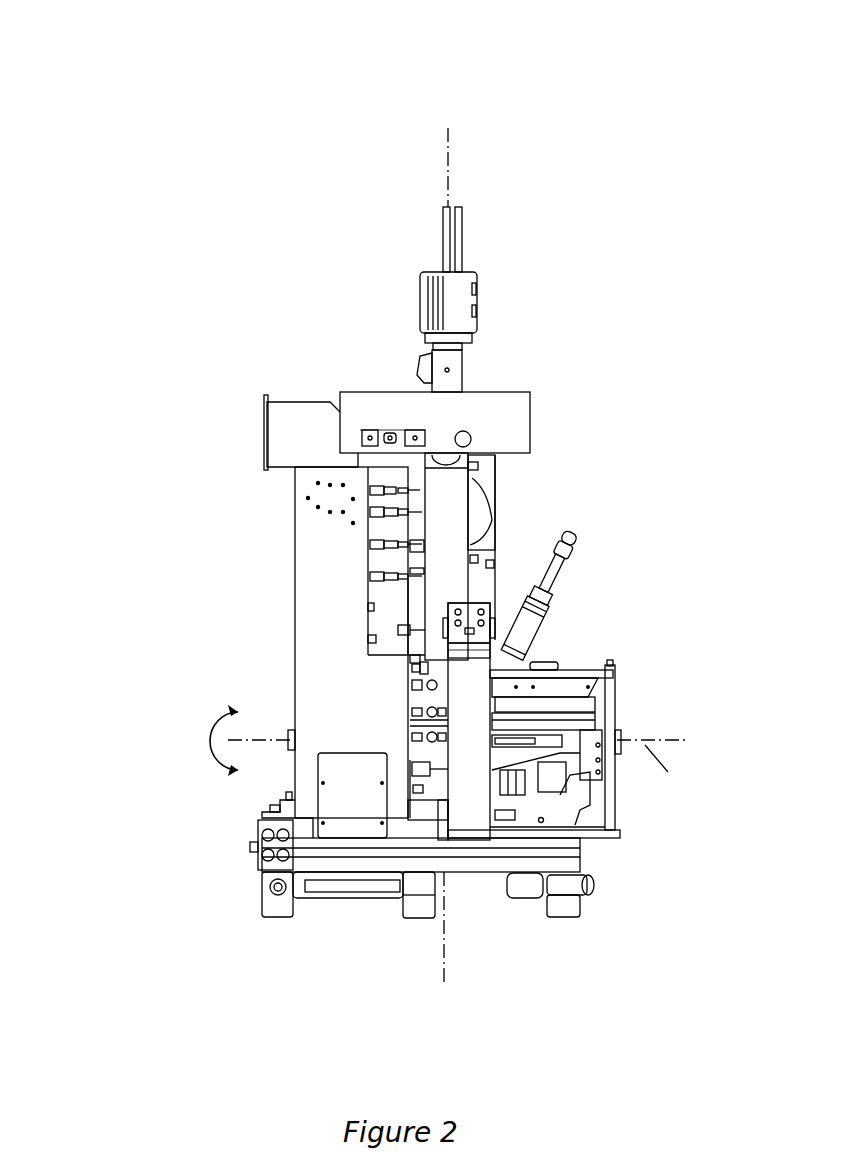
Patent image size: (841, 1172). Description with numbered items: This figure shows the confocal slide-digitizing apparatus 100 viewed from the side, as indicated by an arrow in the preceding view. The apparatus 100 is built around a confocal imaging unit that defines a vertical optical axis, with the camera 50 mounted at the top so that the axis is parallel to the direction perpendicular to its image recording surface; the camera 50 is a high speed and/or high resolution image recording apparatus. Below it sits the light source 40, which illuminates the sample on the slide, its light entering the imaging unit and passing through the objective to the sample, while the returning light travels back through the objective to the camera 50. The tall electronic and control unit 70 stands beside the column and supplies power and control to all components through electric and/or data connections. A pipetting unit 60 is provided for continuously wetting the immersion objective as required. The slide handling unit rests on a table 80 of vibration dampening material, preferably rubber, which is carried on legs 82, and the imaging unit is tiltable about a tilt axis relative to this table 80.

The confocal slide-digitizing apparatus 100 is at (122, 98).
The light source 40 is at (370, 408).
The camera 50 is at (430, 303).
The pipetting unit 60 is at (592, 614).
The electronic and control unit 70 is at (310, 548).
The table 80 is at (570, 863).
The legs 82 is at (278, 907).